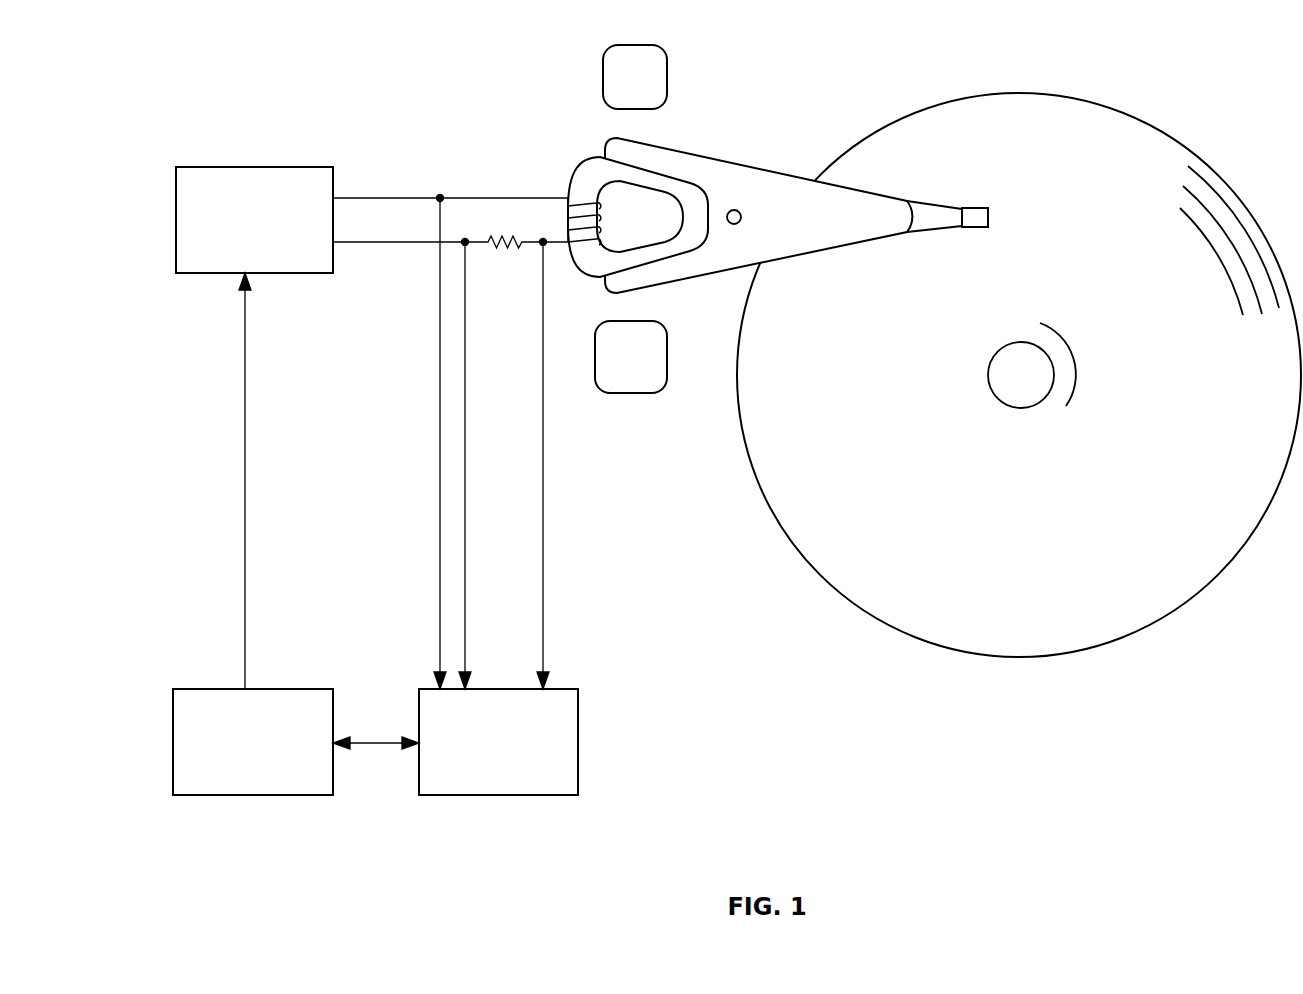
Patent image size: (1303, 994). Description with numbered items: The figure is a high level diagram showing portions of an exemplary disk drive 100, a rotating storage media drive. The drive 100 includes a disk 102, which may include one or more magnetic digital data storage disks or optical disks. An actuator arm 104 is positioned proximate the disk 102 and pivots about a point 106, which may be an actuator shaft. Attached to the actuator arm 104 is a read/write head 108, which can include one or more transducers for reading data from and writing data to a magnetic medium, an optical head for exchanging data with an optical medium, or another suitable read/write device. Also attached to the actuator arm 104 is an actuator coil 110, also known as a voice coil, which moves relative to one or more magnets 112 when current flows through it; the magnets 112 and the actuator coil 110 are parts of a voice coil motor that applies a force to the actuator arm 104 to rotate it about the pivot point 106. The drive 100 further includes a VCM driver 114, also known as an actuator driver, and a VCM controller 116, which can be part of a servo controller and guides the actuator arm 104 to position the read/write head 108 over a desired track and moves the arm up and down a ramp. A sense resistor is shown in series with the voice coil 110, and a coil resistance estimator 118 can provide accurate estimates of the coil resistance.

The disk drive 100 is at (737, 455).
The disk 102 is at (1120, 98).
The actuator arm 104 is at (768, 160).
The pivot point 106 is at (733, 208).
The read/write head 108 is at (980, 197).
The actuator coil 110 is at (567, 188).
The magnets 112 is at (598, 62).
The VCM driver 114 is at (303, 158).
The VCM controller 116 is at (297, 678).
The coil resistance estimator 118 is at (560, 678).